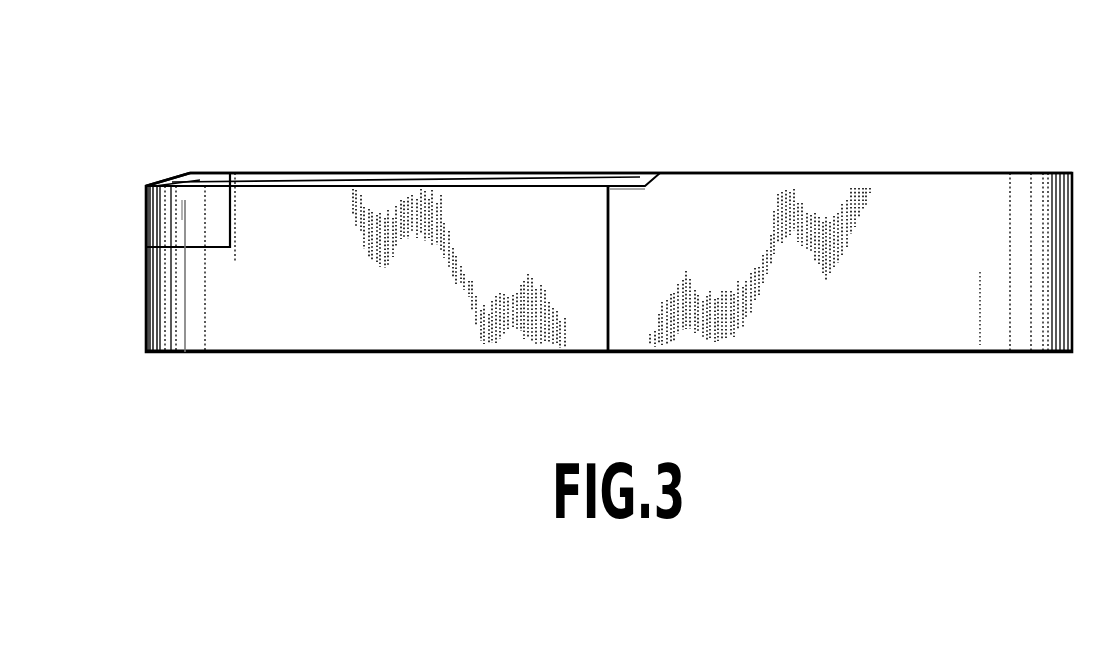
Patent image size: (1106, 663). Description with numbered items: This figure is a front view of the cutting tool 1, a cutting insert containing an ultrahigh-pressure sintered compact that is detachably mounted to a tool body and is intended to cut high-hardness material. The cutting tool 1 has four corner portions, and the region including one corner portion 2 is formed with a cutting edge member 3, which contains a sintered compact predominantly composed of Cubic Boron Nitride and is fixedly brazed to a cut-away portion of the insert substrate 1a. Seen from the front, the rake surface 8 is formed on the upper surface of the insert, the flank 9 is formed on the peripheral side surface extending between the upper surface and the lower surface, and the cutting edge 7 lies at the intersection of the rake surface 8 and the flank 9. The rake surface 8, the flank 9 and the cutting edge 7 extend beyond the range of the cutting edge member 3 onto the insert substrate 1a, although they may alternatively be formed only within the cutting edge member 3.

The cutting tool 1 is at (767, 232).
The insert substrate 1a is at (257, 177).
The corner portion 2 is at (145, 185).
The cutting edge member 3 is at (188, 232).
The cutting edge 7 is at (146, 184).
The rake surface 8 is at (169, 163).
The flank 9 is at (158, 217).